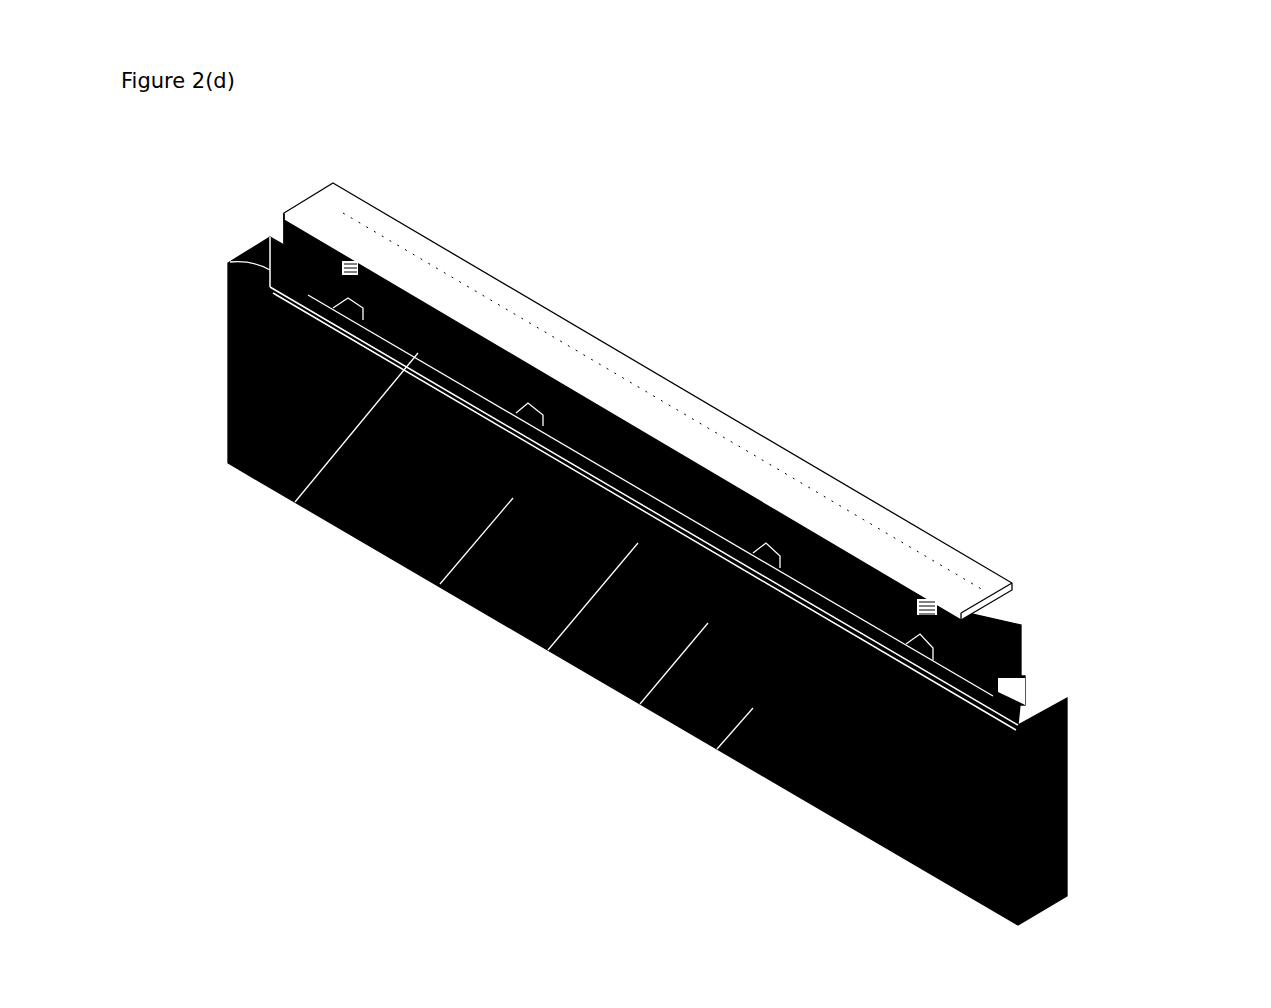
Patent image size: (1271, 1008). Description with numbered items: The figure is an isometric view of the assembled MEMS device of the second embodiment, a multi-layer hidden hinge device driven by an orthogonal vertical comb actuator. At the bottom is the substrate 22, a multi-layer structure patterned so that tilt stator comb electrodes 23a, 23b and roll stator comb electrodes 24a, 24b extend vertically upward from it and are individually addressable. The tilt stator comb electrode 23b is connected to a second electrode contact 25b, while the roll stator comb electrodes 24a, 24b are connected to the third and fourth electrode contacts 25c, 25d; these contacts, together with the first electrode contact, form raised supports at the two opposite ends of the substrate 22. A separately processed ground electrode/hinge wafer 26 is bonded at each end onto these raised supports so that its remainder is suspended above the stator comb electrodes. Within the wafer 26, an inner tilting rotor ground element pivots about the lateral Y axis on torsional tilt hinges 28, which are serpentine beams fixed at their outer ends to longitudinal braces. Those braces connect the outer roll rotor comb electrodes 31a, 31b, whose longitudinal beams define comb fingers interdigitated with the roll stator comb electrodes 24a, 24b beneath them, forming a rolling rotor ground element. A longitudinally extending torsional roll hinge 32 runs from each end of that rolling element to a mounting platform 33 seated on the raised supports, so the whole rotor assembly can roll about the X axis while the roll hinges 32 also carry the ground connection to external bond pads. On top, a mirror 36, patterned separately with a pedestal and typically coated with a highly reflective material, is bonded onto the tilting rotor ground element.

The substrate 22 is at (1060, 780).
The tilt stator comb electrode 23a is at (432, 576).
The tilt stator comb electrode 23b is at (540, 642).
The roll stator comb electrode 24a is at (287, 494).
The roll stator comb electrode 24b is at (632, 696).
The second electrode contact 25b is at (1015, 660).
The third electrode contact 25c is at (222, 254).
The fourth electrode contact 25d is at (1005, 690).
The ground electrode/hinge wafer 26 is at (1016, 626).
The torsional tilt hinge 28 is at (626, 425).
The roll rotor comb electrode 31a is at (220, 345).
The roll rotor comb electrode 31b is at (709, 741).
The torsional roll hinge 32 is at (342, 253).
The mounting platform 33 is at (278, 222).
The mirror 36 is at (540, 307).